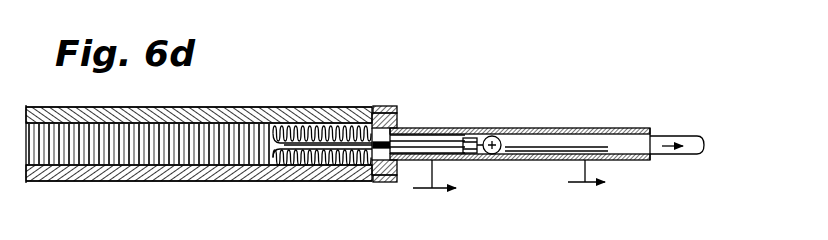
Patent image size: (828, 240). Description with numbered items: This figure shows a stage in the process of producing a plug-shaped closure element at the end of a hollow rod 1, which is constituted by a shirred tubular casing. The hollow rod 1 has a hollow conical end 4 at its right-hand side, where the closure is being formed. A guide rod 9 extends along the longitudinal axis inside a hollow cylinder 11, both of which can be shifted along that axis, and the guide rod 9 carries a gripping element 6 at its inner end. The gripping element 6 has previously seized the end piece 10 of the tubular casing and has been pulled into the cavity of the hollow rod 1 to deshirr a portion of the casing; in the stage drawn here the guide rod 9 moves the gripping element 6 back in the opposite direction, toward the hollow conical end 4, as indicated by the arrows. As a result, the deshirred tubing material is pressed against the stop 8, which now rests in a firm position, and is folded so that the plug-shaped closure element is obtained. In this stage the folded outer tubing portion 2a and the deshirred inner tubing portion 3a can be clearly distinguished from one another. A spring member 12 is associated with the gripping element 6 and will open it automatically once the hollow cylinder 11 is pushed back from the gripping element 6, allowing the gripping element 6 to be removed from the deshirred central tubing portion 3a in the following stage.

The hollow rod 1 is at (259, 106).
The folded outer tubing portion 2a is at (318, 142).
The deshirred inner tubing portion 3a is at (316, 149).
The hollow conical end 4 is at (383, 176).
The gripping element 6 is at (444, 140).
The stop 8 is at (395, 120).
The guide rod 9 is at (672, 137).
The tubular casing end piece 10 is at (375, 114).
The hollow cylinder 11 is at (591, 129).
The spring member 12 is at (474, 138).